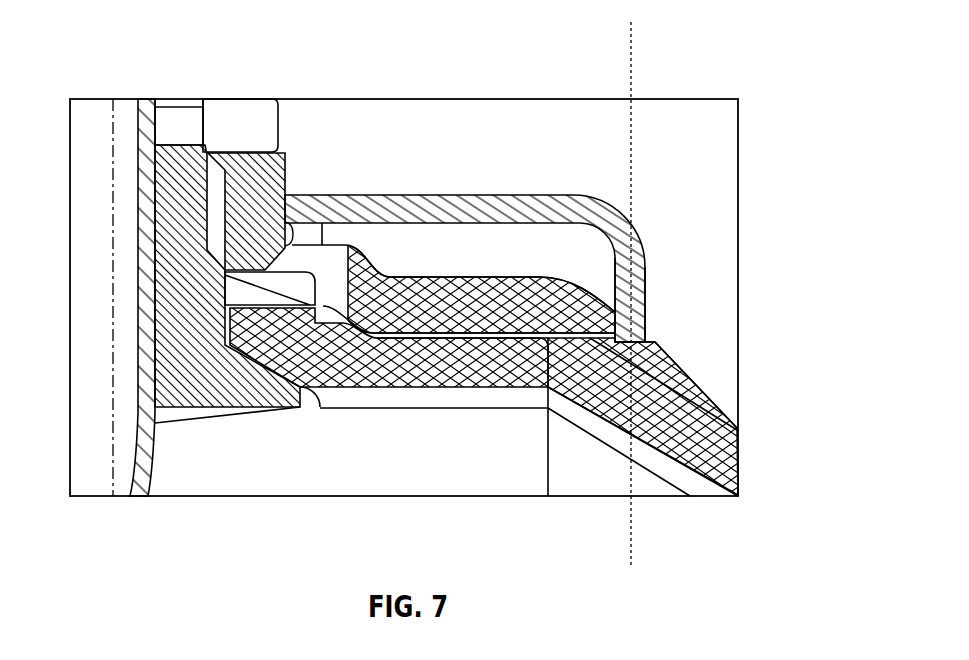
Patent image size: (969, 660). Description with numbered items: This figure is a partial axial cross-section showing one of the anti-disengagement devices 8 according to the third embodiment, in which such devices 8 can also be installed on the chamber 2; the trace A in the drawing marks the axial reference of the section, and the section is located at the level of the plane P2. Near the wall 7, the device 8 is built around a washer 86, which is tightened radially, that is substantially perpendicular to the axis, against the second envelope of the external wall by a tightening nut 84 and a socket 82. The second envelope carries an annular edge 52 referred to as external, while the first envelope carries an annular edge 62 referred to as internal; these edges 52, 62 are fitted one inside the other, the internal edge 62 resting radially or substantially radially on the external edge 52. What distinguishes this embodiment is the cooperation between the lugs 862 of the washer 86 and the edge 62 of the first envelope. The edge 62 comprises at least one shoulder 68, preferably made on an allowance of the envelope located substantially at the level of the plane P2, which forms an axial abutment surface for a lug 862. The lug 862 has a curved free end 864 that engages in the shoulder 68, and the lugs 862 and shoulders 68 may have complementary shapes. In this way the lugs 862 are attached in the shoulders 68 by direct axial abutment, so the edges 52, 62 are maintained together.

The chamber 2 is at (605, 477).
The axis A is at (112, 126).
The plane P2 is at (631, 88).
The wall 7 is at (146, 120).
The anti-disengagement device 8 is at (330, 166).
The socket 82 is at (193, 345).
The tightening nut 84 is at (242, 120).
The washer 86 is at (260, 285).
The lug 862 is at (562, 213).
The curved free end 864 is at (635, 313).
The shoulder 68 is at (620, 334).
The external annular edge 52 is at (510, 365).
The internal annular edge 62 is at (739, 433).